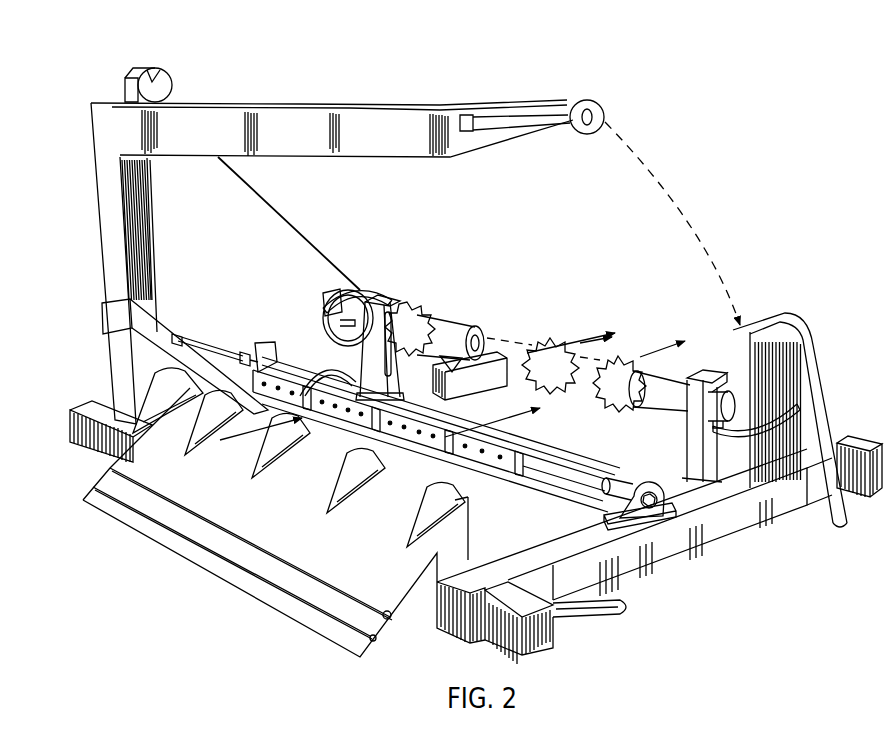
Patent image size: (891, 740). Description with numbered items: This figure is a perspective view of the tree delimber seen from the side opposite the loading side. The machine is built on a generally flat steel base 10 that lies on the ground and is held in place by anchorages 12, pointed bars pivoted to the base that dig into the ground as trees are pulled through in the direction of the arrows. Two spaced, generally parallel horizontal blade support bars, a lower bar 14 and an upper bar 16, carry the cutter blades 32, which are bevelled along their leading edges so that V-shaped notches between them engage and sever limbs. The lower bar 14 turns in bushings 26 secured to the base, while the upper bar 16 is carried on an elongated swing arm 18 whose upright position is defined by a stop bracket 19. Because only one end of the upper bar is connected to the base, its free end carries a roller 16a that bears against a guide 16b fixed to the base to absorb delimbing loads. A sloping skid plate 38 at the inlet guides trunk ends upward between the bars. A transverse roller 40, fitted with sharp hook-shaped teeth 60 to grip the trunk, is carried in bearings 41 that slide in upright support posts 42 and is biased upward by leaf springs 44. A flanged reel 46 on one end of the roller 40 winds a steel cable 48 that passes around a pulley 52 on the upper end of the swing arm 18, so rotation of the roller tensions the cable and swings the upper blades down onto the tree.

The base 10 is at (727, 523).
The anchorages 12 is at (582, 612).
The lower blade support bar 14 is at (626, 477).
The upper blade support bar 16 is at (288, 103).
The roller 16a is at (572, 123).
The guide 16b is at (747, 352).
The swing arm 18 is at (138, 203).
The stop bracket 19 is at (112, 317).
The bushings 26 is at (645, 484).
The cutter blades 32 is at (448, 440).
The skid plate 38 is at (225, 545).
The roller 40 is at (443, 328).
The bearings 41 is at (722, 389).
The upright support posts 42 is at (363, 347).
The leaf springs 44 is at (800, 404).
The flanged reel 46 is at (328, 320).
The cable 48 is at (305, 233).
The pulley 52 is at (161, 80).
The teeth 60 is at (401, 314).